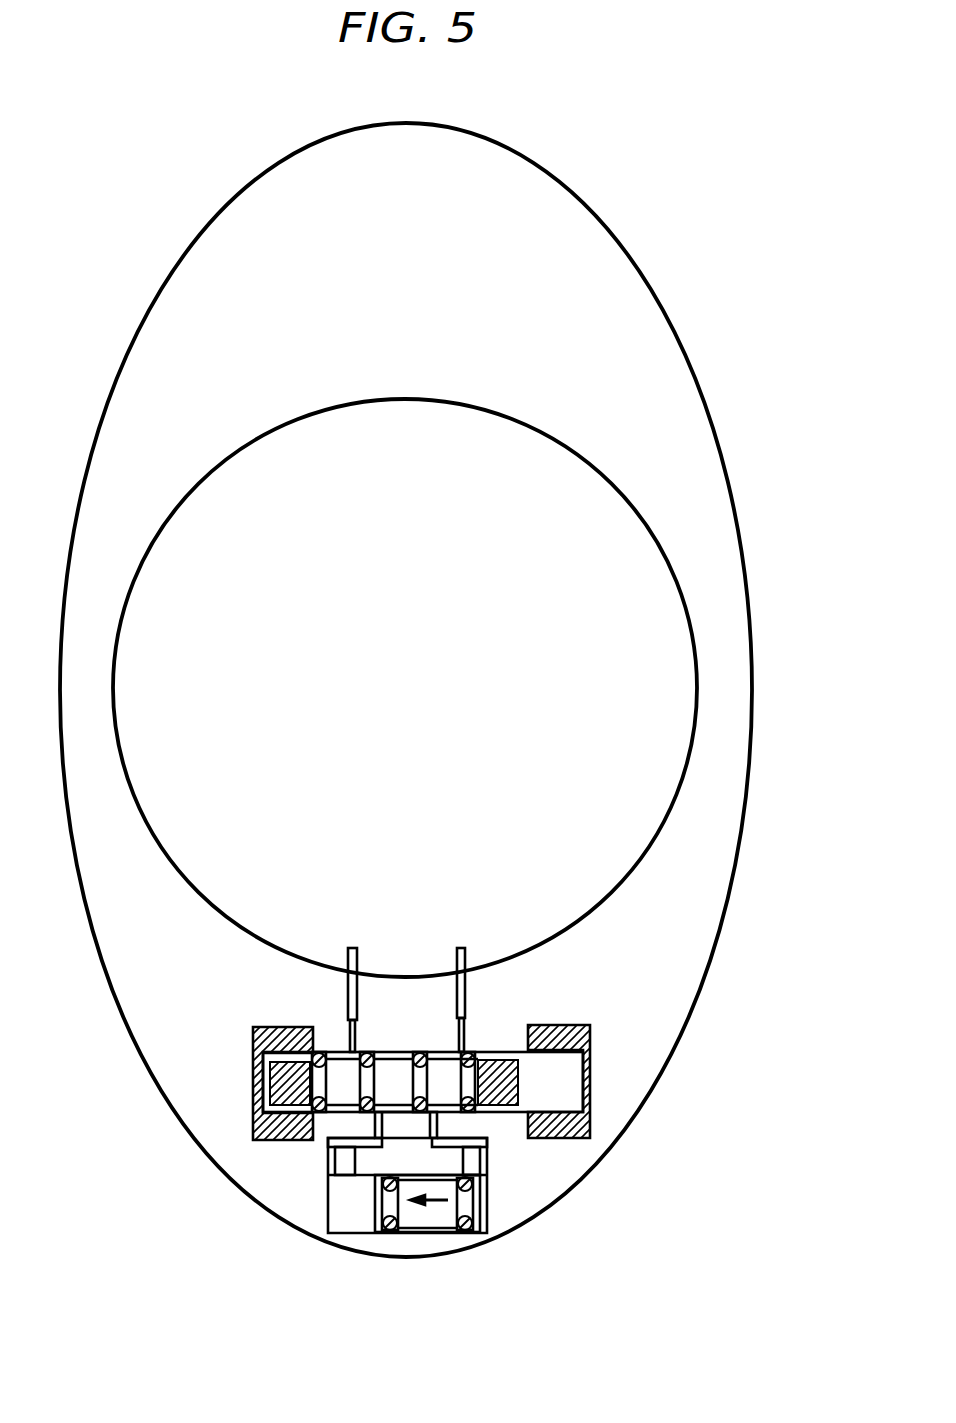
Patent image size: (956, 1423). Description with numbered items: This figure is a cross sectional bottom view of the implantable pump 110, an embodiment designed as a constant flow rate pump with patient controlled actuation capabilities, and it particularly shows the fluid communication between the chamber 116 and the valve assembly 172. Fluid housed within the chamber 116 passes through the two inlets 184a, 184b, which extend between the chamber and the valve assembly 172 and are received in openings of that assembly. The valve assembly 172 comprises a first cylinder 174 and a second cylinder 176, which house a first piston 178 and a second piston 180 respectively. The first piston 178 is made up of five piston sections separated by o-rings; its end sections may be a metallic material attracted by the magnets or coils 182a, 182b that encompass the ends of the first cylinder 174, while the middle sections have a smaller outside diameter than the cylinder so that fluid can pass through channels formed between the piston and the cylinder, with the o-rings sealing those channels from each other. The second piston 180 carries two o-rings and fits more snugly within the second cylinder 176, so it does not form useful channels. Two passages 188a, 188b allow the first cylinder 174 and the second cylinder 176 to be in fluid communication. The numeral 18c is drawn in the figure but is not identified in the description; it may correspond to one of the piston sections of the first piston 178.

The implantable pump 110 is at (430, 690).
The chamber 116 is at (410, 688).
The valve assembly 172 is at (449, 1098).
The first cylinder 174 is at (448, 1143).
The second cylinder 176 is at (459, 1247).
The first piston 178 is at (345, 1158).
The second piston 180 is at (427, 1256).
The magnet or coil 182a is at (227, 1055).
The magnet or coil 182b is at (596, 1046).
The inlet 184a is at (300, 958).
The inlet 184b is at (507, 958).
The passage 188a is at (328, 1226).
The passage 188b is at (521, 1214).
The central track segment 18c is at (398, 1008).